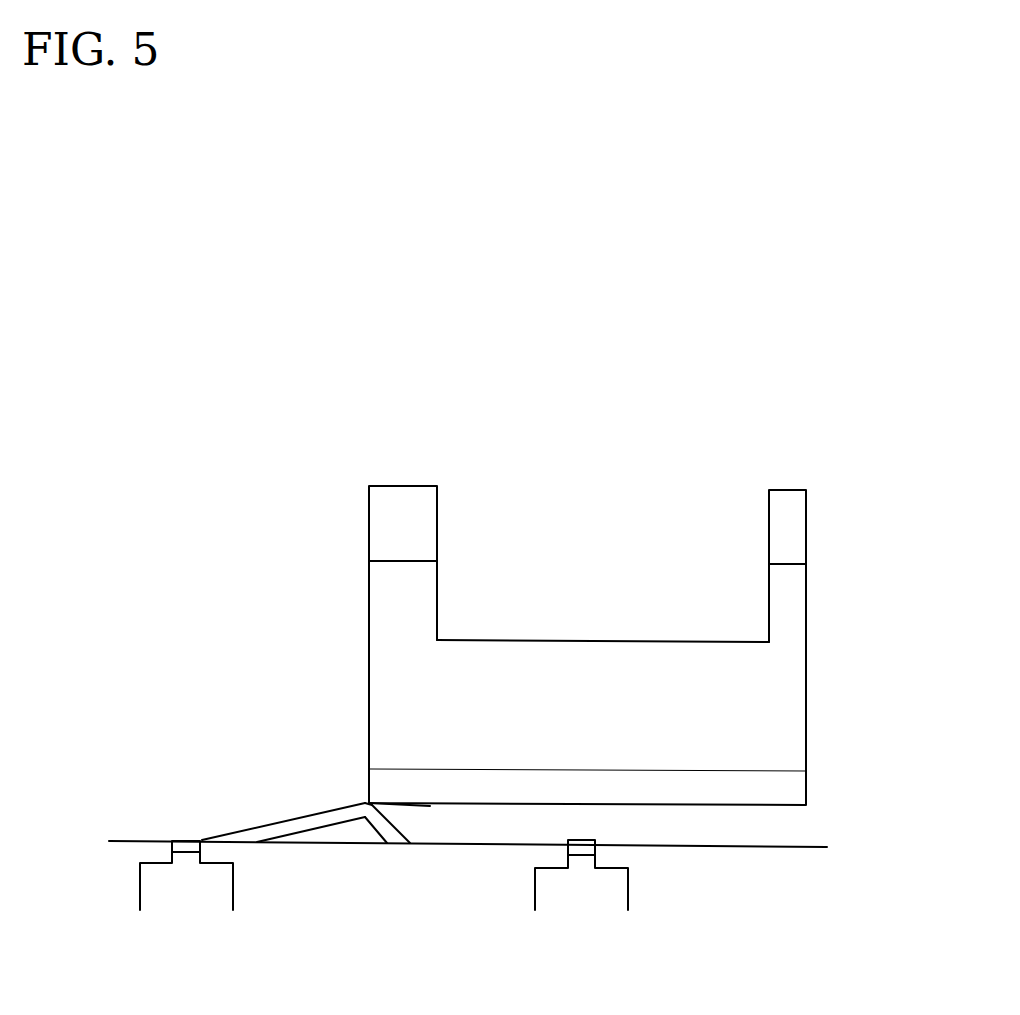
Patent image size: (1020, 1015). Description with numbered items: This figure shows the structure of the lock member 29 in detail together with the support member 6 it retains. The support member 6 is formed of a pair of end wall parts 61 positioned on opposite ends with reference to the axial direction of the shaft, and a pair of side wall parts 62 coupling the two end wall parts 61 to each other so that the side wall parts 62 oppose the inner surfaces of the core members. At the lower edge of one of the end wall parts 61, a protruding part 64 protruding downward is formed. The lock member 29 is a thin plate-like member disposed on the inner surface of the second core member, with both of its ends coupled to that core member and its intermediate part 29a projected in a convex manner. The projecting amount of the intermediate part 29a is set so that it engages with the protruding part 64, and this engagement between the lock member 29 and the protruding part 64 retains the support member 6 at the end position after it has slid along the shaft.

The support member 6 is at (639, 644).
The end wall parts 61 is at (438, 533).
The side wall parts 62 is at (637, 712).
The protruding part 64 is at (388, 811).
The lock member 29 is at (305, 760).
The intermediate part 29a is at (362, 805).